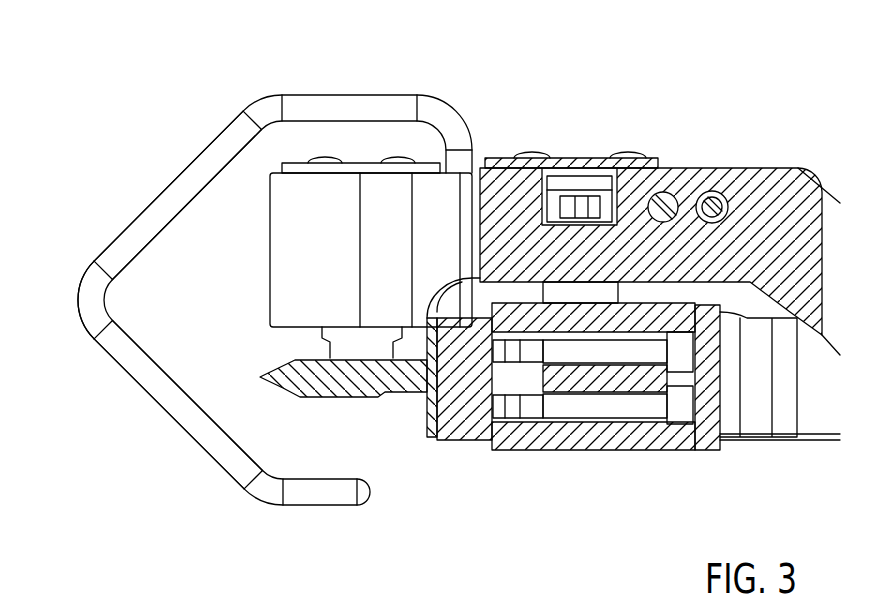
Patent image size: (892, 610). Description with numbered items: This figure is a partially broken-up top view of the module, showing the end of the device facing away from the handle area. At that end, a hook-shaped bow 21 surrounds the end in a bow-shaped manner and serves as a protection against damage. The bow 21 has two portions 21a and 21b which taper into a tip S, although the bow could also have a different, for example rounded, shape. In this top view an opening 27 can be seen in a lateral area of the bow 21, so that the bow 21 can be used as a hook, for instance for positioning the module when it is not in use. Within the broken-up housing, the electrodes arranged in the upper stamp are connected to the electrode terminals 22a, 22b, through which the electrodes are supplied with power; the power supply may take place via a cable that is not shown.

The hook-shaped bow 21 is at (182, 428).
The portion of the bow 21a is at (133, 221).
The portion of the bow 21b is at (135, 381).
The tip S is at (78, 300).
The opening 27 is at (358, 437).
The electrode terminal 22a is at (687, 348).
The electrode terminal 22b is at (680, 417).